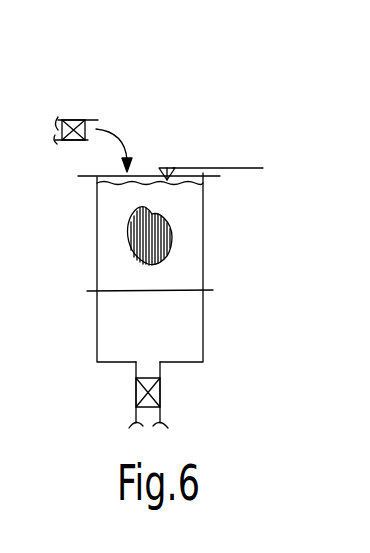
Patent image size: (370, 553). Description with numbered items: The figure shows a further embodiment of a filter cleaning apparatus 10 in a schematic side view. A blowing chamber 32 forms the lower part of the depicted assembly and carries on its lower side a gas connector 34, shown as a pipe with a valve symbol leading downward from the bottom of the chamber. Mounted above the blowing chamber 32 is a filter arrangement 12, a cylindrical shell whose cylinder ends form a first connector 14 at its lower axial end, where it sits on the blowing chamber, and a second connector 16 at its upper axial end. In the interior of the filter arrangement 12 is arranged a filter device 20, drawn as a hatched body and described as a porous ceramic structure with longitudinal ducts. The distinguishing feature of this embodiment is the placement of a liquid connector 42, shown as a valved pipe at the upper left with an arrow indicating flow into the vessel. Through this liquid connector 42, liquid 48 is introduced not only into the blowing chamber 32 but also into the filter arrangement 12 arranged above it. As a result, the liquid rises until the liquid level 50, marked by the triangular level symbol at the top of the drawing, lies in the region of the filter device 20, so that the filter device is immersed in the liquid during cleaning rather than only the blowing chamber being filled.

The filter cleaning apparatus 10 is at (229, 134).
The filter arrangement 12 is at (212, 241).
The first connector 14 is at (143, 302).
The second connector 16 is at (147, 167).
The filter device 20 is at (157, 240).
The blowing chamber 32 is at (204, 327).
The gas connector 34 is at (148, 368).
The liquid connector 42 is at (86, 125).
The liquid 48 is at (140, 165).
The liquid level 50 is at (236, 167).